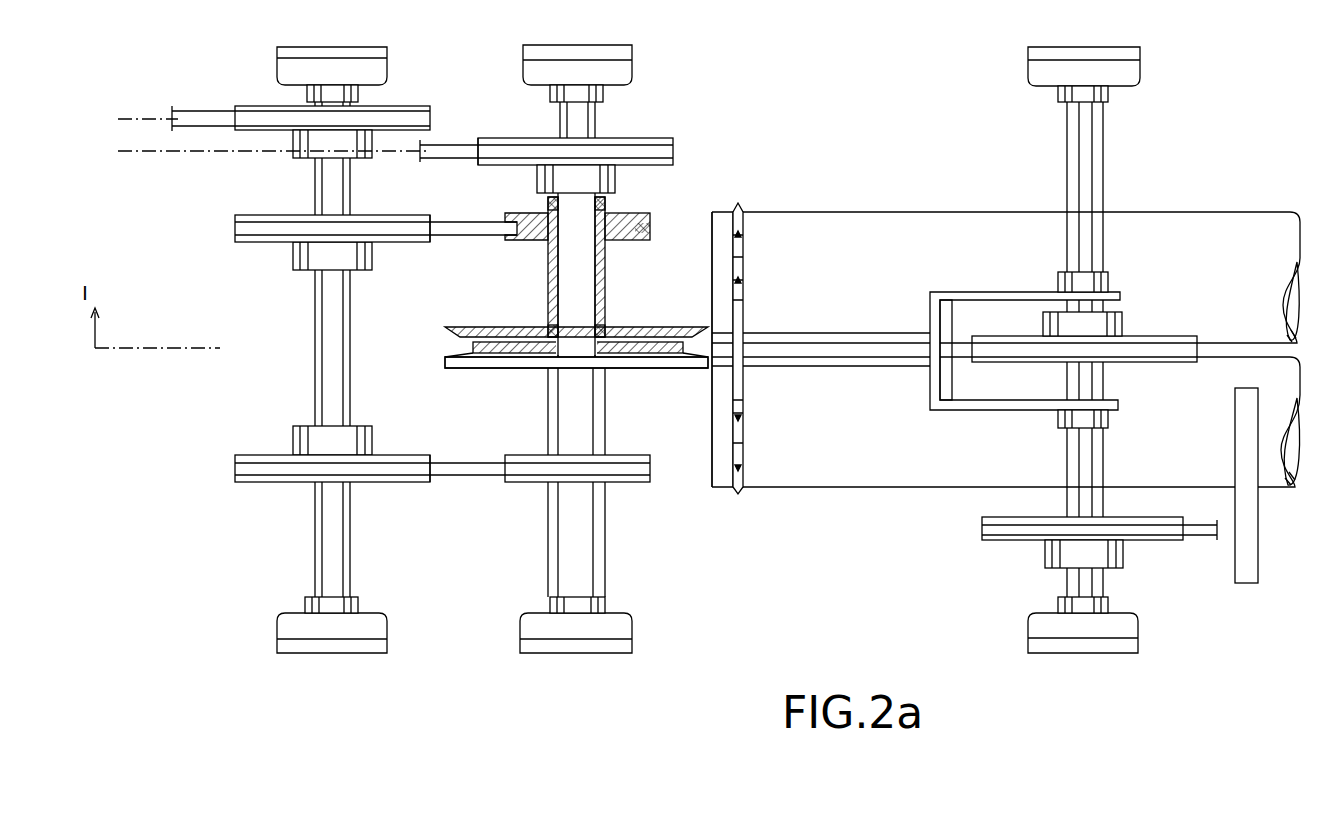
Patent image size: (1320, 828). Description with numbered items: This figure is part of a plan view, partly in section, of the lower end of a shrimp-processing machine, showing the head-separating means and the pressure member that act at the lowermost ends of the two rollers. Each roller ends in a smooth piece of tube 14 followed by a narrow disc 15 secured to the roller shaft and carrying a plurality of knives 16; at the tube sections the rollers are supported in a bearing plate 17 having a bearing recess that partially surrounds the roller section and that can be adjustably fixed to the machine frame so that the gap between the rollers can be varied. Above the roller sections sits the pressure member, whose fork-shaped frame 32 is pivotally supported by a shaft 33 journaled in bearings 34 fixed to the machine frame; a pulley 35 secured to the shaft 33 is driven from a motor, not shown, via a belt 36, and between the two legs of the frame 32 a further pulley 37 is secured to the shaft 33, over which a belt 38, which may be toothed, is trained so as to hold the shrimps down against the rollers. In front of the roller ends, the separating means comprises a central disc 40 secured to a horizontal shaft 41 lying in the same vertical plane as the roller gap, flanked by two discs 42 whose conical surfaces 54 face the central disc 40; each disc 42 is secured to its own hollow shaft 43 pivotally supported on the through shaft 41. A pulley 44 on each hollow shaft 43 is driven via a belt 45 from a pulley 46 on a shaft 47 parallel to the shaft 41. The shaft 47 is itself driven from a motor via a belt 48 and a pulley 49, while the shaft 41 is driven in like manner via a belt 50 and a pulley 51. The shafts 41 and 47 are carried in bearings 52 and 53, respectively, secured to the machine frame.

The smooth piece of tube 14 is at (1220, 222).
The narrow disc 15 is at (722, 224).
The knives 16 is at (742, 228).
The bearing plate 17 is at (1250, 558).
The frame 32 is at (948, 293).
The shaft 33 is at (1087, 140).
The bearings 34 is at (1070, 61).
The pulley 35 is at (1016, 540).
The belt 36 is at (1194, 536).
The pulley 37 is at (1120, 325).
The belt 38 is at (958, 350).
The disc 40 is at (504, 368).
The horizontal shaft 41 is at (585, 265).
The discs 42 is at (672, 331).
The hollow shaft 43 is at (548, 265).
The pulley 44 is at (526, 213).
The belt 45 is at (436, 222).
The pulley 46 is at (366, 258).
The shaft 47 is at (338, 308).
The belt 48 is at (186, 122).
The pulley 49 is at (358, 154).
The belt 50 is at (452, 146).
The pulley 51 is at (610, 180).
The bearings 52 is at (618, 70).
The bearings 53 is at (374, 74).
The conical surfaces 54 is at (470, 352).